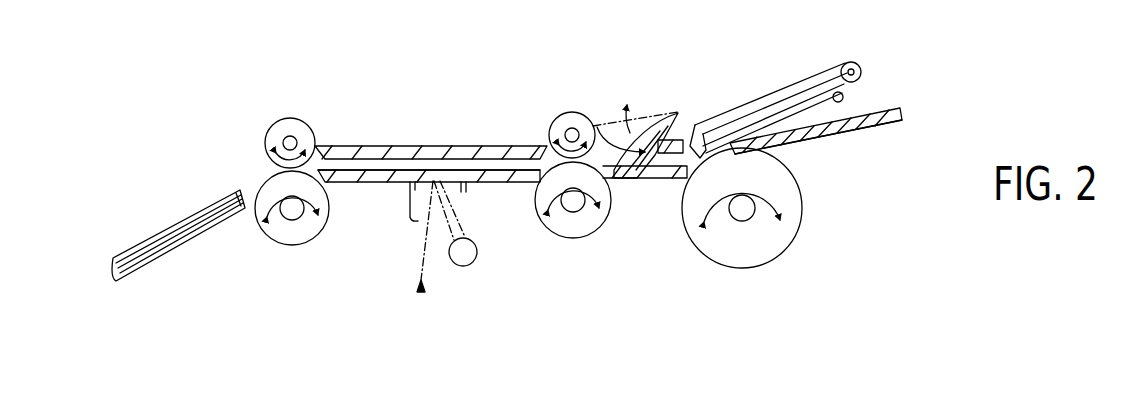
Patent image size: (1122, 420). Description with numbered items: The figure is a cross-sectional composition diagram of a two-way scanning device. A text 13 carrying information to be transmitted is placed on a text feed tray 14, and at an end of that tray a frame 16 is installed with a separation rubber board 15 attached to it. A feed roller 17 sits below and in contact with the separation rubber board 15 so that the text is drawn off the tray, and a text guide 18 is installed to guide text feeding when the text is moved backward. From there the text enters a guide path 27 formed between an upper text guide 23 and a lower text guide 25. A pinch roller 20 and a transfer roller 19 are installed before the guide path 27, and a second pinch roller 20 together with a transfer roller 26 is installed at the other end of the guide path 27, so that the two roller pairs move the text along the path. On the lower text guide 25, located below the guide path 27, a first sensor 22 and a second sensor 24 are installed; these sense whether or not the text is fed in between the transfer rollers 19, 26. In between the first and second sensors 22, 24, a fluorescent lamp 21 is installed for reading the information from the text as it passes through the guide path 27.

The text 13 is at (877, 115).
The text feed tray 14 is at (848, 135).
The separation rubber board 15 is at (798, 90).
The frame 16 is at (768, 105).
The feed roller 17 is at (768, 253).
The text guide 18 is at (657, 160).
The transfer roller 19 is at (580, 236).
The pinch roller 20 is at (282, 119).
The fluorescent lamp 21 is at (466, 268).
The first sensor 22 is at (468, 190).
The upper text guide 23 is at (375, 146).
The second sensor 24 is at (398, 204).
The lower text guide 25 is at (343, 184).
The transfer roller 26 is at (287, 246).
The guide path 27 is at (497, 168).